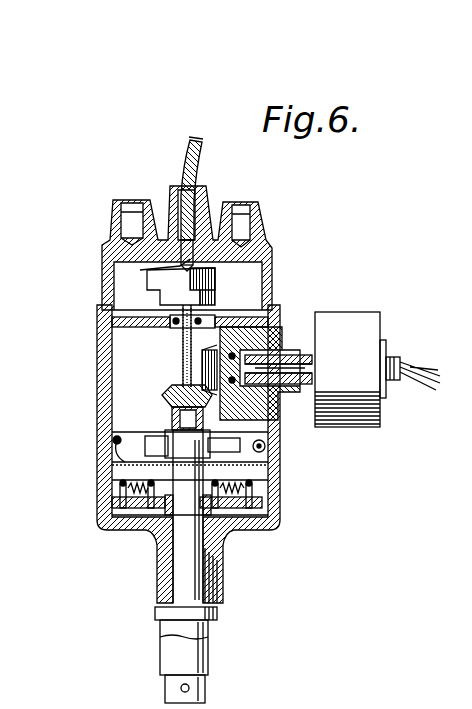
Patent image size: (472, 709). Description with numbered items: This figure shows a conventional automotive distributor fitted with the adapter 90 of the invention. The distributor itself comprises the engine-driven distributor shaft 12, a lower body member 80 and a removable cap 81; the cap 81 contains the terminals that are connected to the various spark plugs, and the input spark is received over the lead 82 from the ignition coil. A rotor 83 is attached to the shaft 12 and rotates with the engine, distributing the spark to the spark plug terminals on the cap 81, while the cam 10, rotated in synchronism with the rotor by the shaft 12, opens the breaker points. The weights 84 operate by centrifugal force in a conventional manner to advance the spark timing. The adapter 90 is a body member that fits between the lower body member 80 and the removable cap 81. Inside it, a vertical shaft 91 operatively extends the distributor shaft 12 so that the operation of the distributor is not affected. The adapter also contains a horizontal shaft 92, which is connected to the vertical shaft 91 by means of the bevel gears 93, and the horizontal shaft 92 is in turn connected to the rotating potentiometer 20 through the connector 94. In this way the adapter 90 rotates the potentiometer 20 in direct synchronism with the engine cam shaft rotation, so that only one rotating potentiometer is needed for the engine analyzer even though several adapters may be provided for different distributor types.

The cam 10 is at (170, 442).
The distributor shaft 12 is at (182, 550).
The rotating potentiometer 20 is at (366, 312).
The lower body member 80 is at (97, 510).
The removable cap 81 is at (103, 262).
The lead 82 is at (183, 166).
The rotor 83 is at (147, 273).
The weights 84 is at (255, 478).
The adapter 90 is at (97, 353).
The shaft 91 is at (183, 345).
The horizontal shaft 92 is at (297, 335).
The bevel gears 93 is at (176, 386).
The connector 94 is at (290, 395).